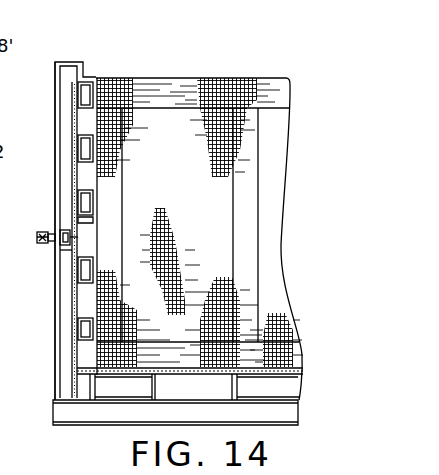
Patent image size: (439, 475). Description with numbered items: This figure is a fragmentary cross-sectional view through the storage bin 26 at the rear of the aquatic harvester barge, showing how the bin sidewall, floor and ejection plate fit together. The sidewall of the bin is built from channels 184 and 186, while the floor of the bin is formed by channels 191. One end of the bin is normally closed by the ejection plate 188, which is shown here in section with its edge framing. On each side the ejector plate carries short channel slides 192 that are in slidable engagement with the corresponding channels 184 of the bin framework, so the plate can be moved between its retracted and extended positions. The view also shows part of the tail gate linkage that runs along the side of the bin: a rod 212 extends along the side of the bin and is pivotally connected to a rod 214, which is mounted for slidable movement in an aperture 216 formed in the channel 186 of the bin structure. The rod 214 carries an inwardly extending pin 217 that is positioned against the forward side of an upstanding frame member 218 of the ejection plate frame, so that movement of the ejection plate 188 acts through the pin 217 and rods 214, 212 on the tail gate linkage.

The storage bin 26 is at (245, 76).
The channel 184 is at (82, 100).
The channel 186 is at (62, 366).
The ejection plate 188 is at (180, 181).
The channel 191 is at (152, 388).
The short channel slide 192 is at (97, 215).
The rod 212 is at (43, 245).
The rod 214 is at (68, 227).
The aperture 216 is at (67, 257).
The pin 217 is at (85, 230).
The upstanding frame member 218 is at (83, 247).